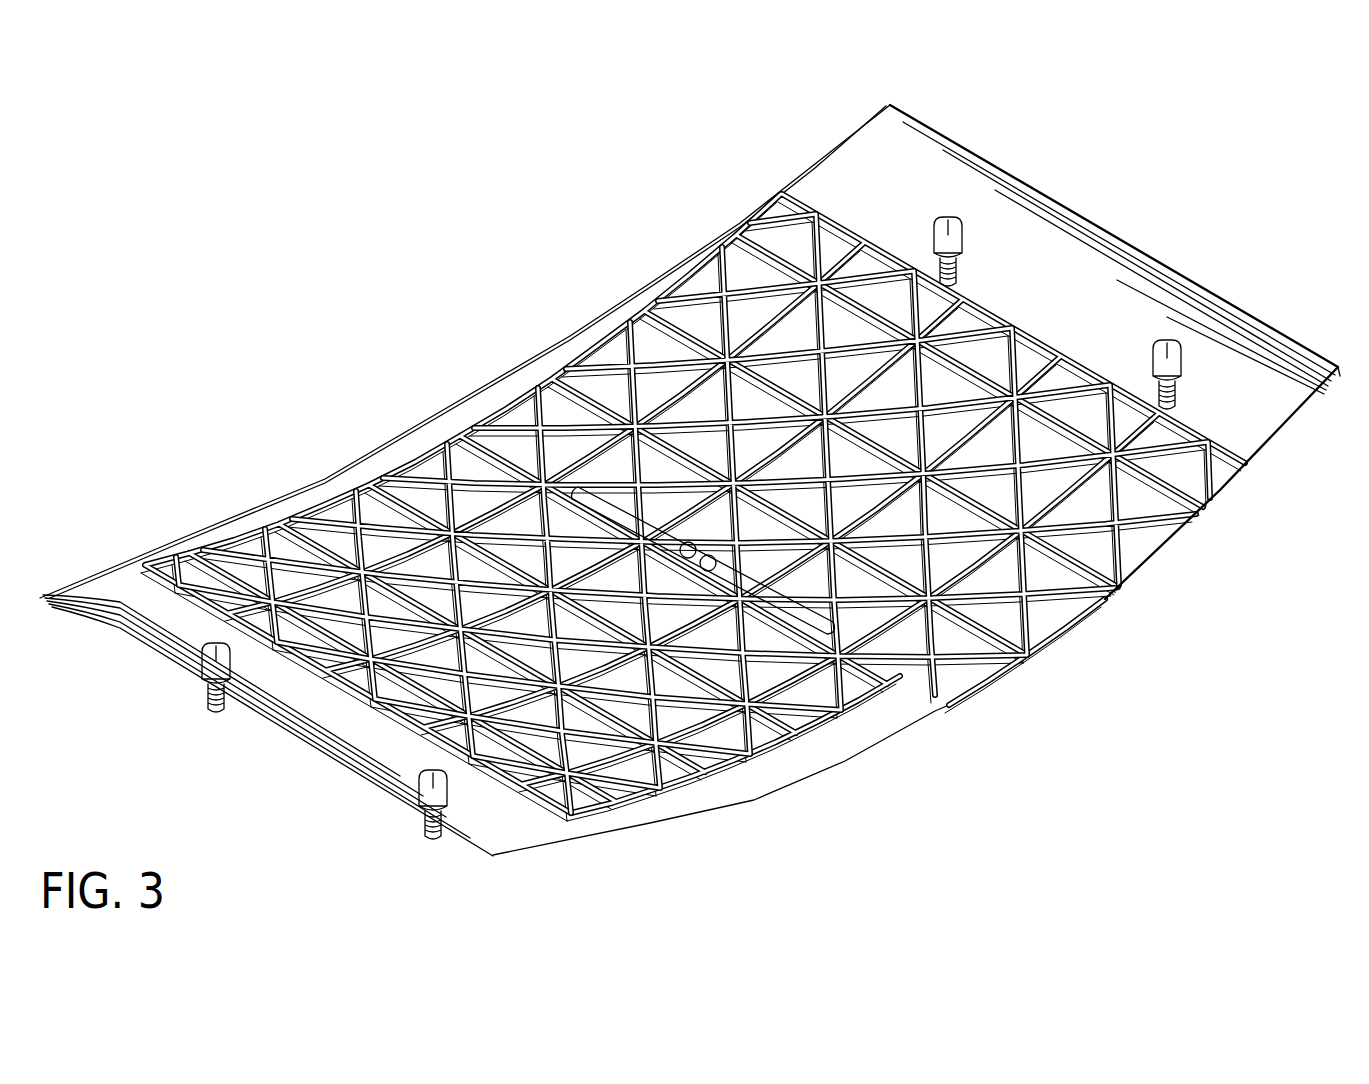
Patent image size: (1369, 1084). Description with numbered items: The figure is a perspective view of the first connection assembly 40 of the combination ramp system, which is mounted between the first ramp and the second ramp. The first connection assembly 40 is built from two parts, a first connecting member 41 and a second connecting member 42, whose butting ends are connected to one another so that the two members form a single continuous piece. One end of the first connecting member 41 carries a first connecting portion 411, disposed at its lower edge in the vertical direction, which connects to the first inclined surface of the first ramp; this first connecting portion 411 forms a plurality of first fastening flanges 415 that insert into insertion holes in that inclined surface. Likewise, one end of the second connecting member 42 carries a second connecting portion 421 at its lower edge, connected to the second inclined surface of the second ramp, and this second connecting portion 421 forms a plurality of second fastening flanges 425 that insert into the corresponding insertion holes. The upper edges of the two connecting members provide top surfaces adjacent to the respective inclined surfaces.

The first connection assembly 40 is at (418, 347).
The first connecting member 41 is at (563, 323).
The second connecting member 42 is at (318, 465).
The first connecting portion 411 is at (1103, 290).
The first fastening flanges 415 is at (948, 283).
The second connecting portion 421 is at (313, 723).
The second fastening flanges 425 is at (214, 713).